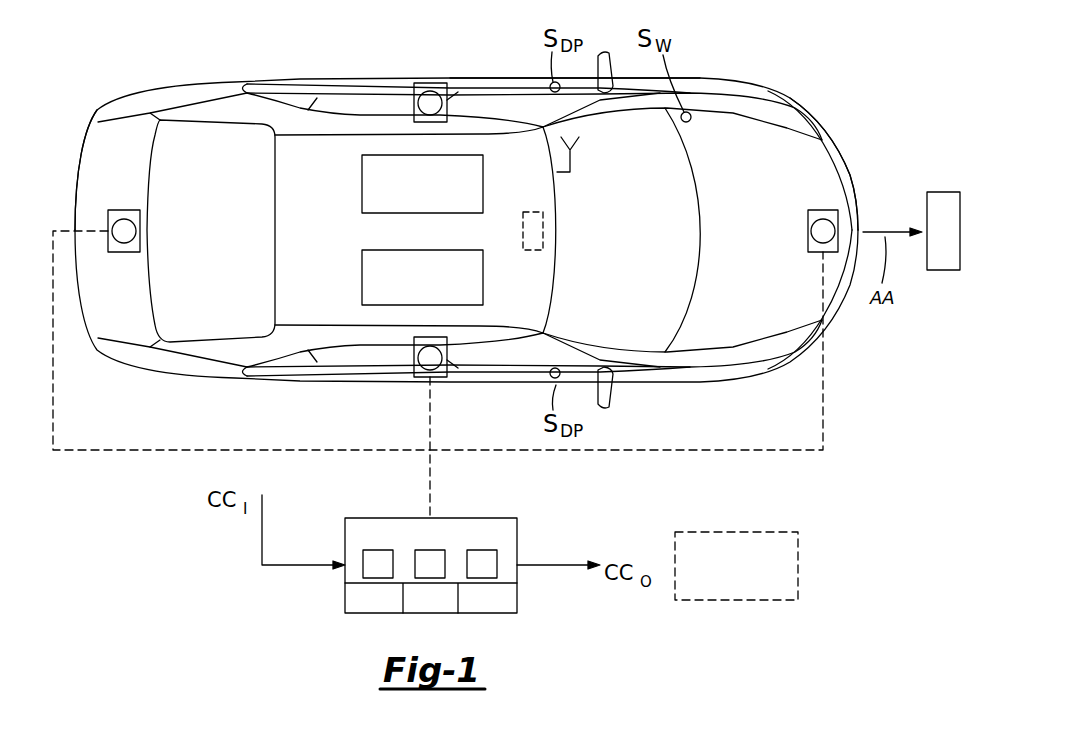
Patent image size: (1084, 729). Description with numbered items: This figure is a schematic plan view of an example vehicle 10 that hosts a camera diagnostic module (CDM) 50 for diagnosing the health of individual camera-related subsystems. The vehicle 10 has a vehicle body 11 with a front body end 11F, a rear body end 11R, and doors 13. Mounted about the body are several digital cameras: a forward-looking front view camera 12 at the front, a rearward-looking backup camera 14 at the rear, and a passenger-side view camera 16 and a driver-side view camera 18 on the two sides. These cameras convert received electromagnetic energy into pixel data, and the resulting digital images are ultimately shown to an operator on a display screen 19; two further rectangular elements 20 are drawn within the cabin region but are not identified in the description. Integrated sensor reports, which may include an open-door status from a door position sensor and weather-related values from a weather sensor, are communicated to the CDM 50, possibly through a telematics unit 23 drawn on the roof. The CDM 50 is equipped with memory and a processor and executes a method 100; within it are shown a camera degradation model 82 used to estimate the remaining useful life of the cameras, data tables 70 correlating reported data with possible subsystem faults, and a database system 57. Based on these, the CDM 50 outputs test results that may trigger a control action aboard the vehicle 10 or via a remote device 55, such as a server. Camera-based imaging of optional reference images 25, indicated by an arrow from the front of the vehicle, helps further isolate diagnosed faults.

The vehicle 10 is at (790, 46).
The vehicle body 11 is at (709, 78).
The rear body end 11R is at (80, 176).
The front body end 11F is at (848, 168).
The front view camera 12 is at (808, 233).
The doors 13 is at (512, 80).
The backup camera 14 is at (124, 210).
The passenger-side view camera 16 is at (440, 377).
The driver-side view camera 18 is at (430, 83).
The display screen 19 is at (543, 230).
The seats 20 is at (441, 195).
The telematics unit 23 is at (592, 140).
The reference images 25 is at (961, 244).
The camera diagnostic module 50 is at (431, 537).
The remote device 55 is at (798, 566).
The database system 57 is at (482, 564).
The data tables 70 is at (430, 564).
The camera degradation model 82 is at (378, 564).
The method 100 is at (487, 598).